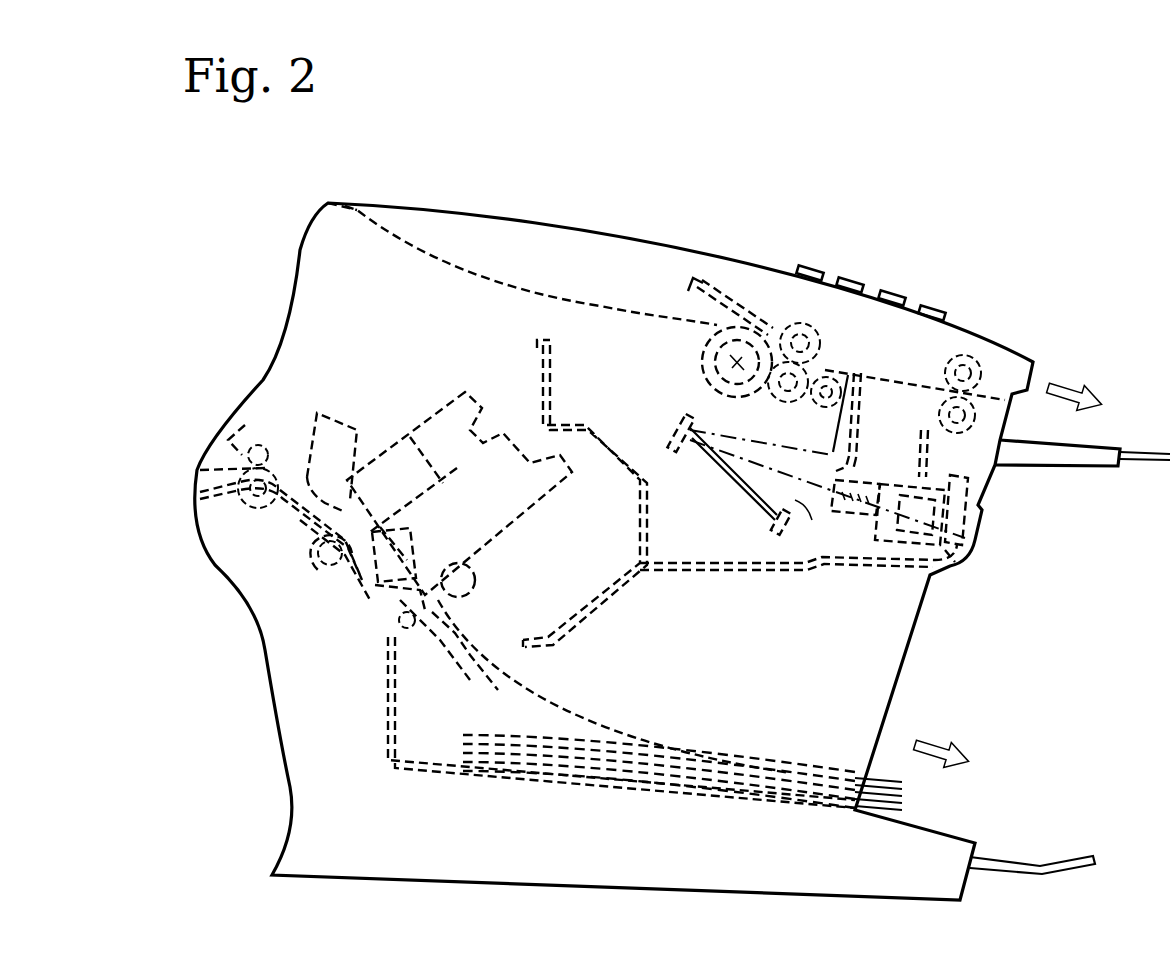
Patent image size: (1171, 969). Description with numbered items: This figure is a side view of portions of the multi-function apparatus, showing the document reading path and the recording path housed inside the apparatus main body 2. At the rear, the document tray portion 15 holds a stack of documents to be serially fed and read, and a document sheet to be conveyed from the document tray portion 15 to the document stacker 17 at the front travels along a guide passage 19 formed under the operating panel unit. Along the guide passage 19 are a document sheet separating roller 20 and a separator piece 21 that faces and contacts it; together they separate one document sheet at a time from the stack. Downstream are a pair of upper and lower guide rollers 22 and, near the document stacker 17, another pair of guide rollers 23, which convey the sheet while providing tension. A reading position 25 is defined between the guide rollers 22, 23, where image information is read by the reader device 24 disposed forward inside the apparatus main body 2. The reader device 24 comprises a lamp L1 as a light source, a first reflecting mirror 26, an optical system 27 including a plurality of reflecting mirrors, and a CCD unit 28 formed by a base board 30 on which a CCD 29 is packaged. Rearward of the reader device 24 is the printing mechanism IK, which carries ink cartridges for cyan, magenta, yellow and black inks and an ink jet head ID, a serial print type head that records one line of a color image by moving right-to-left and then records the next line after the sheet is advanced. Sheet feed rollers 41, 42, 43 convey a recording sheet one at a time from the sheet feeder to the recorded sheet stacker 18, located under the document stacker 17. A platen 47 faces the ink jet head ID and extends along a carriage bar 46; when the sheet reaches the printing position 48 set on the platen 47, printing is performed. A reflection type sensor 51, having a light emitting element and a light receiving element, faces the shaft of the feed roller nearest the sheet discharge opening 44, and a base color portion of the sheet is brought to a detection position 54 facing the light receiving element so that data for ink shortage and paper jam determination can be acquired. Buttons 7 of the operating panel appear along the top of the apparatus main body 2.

The apparatus main body 2 is at (868, 672).
The operation buttons 7 is at (932, 309).
The document tray portion 15 is at (478, 270).
The document stacker 17 is at (1100, 465).
The recorded sheet stacker 18 is at (938, 846).
The guide passage 19 is at (682, 306).
The document sheet separating roller 20 is at (700, 368).
The separator piece 21 is at (713, 276).
The guide rollers 22 is at (800, 372).
The guide rollers 23 is at (950, 400).
The reader device 24 is at (786, 560).
The reading position 25 is at (915, 361).
The first reflecting mirror 26 is at (852, 462).
The optical system 27 is at (817, 500).
The CCD unit 28 is at (982, 505).
The CCD 29 is at (978, 542).
The base board 30 is at (965, 565).
The sheet feed roller 41 is at (262, 452).
The sheet feed roller 42 is at (318, 553).
The sheet feed roller 43 is at (384, 625).
The sheet discharge opening 44 is at (505, 648).
The carriage bar 46 is at (476, 578).
The platen 47 is at (360, 590).
The printing position 48 is at (343, 578).
The reflection type sensor 51 is at (448, 626).
The detection position 54 is at (420, 638).
The printing mechanism IK is at (460, 384).
The ink jet head ID is at (402, 568).
The lamp L1 is at (827, 475).